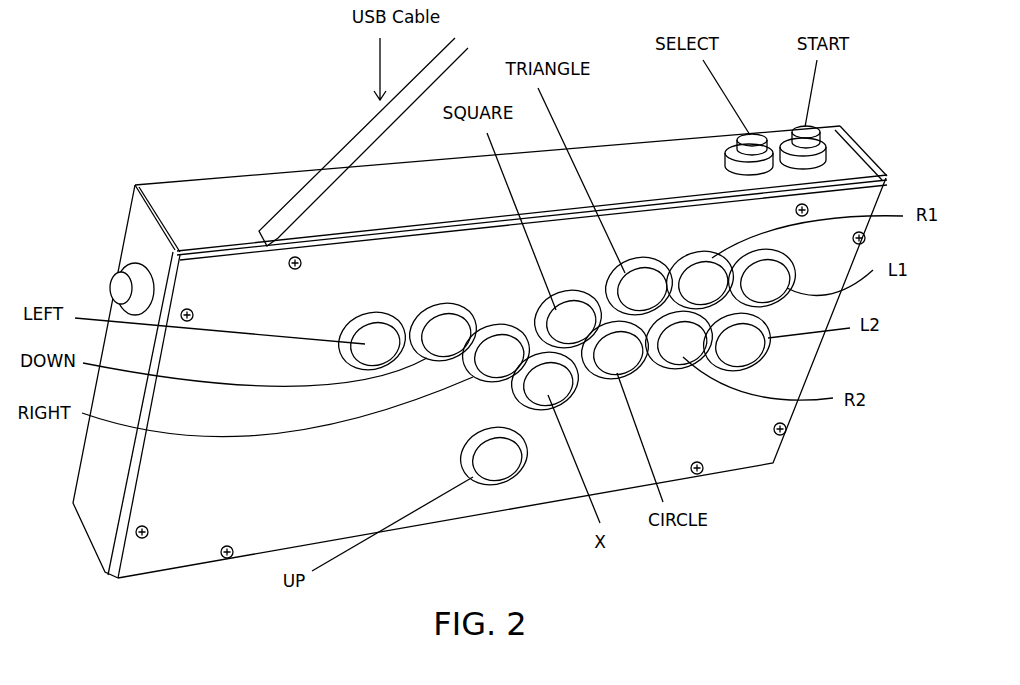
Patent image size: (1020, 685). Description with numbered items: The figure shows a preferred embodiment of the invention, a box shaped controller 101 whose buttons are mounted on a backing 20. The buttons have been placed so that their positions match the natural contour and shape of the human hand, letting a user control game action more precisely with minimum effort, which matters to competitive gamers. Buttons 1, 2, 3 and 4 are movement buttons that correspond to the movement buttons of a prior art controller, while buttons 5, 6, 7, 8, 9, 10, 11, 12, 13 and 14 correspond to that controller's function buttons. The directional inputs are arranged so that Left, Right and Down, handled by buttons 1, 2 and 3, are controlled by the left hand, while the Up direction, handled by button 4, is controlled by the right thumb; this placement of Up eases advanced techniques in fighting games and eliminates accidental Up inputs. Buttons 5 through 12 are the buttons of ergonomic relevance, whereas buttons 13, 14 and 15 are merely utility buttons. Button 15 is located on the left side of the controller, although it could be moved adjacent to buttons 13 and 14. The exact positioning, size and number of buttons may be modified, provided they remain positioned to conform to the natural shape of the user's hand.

The box shaped controller 101 is at (220, 165).
The button 14 is at (818, 130).
The backing 20 is at (497, 378).
The button 15 is at (110, 273).
The button 13 is at (725, 156).
The button 1 is at (371, 341).
The button 2 is at (442, 332).
The button 3 is at (495, 353).
The button 4 is at (493, 456).
The button 5 is at (567, 319).
The button 6 is at (544, 381).
The button 7 is at (638, 286).
The button 8 is at (614, 350).
The button 9 is at (699, 280).
The button 10 is at (678, 340).
The button 11 is at (761, 278).
The button 12 is at (736, 342).